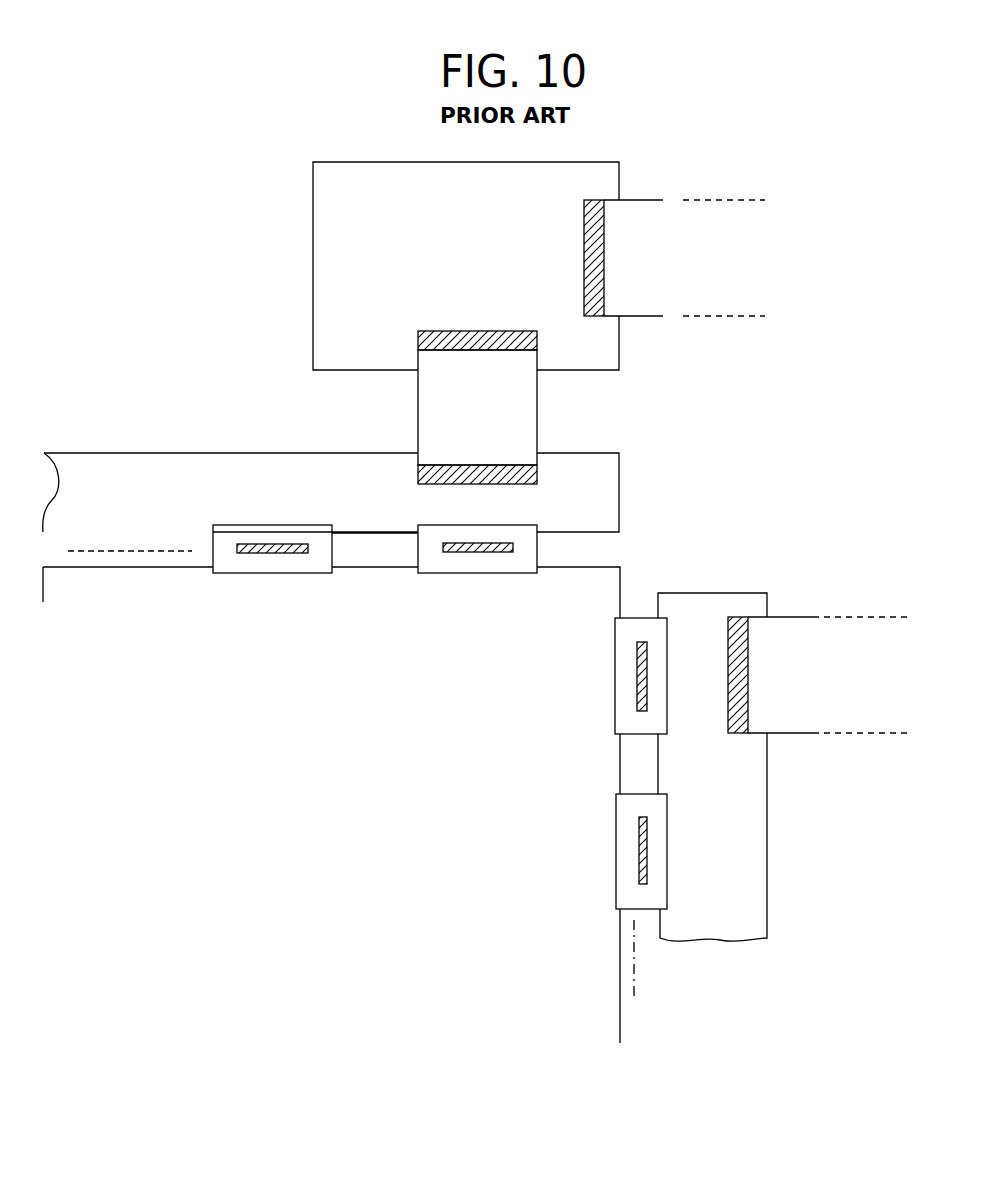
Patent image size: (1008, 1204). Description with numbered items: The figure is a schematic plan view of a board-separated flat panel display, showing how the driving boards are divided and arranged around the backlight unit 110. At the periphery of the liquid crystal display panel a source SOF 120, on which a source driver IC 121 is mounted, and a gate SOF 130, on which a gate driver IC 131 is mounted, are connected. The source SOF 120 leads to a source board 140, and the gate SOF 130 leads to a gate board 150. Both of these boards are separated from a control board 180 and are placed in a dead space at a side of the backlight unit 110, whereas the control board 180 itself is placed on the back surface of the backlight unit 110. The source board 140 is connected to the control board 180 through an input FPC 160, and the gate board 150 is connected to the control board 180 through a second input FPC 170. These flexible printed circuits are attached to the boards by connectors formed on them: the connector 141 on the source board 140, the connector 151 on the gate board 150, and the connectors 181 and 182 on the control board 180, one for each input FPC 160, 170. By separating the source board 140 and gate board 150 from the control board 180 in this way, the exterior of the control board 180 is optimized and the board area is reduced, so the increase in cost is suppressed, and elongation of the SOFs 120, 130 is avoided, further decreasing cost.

The backlight unit 110 is at (612, 1020).
The source SOF 120 is at (435, 563).
The source driver IC 121 is at (272, 552).
The gate SOF 130 is at (623, 710).
The gate driver IC 131 is at (643, 665).
The source board 140 is at (234, 468).
The connector 141 is at (528, 477).
The gate board 150 is at (715, 617).
The connector 151 is at (738, 733).
The input FPC 160 is at (525, 430).
The input FPC 170 is at (642, 293).
The control board 180 is at (323, 208).
The connector 181 is at (452, 338).
The connector 182 is at (583, 225).